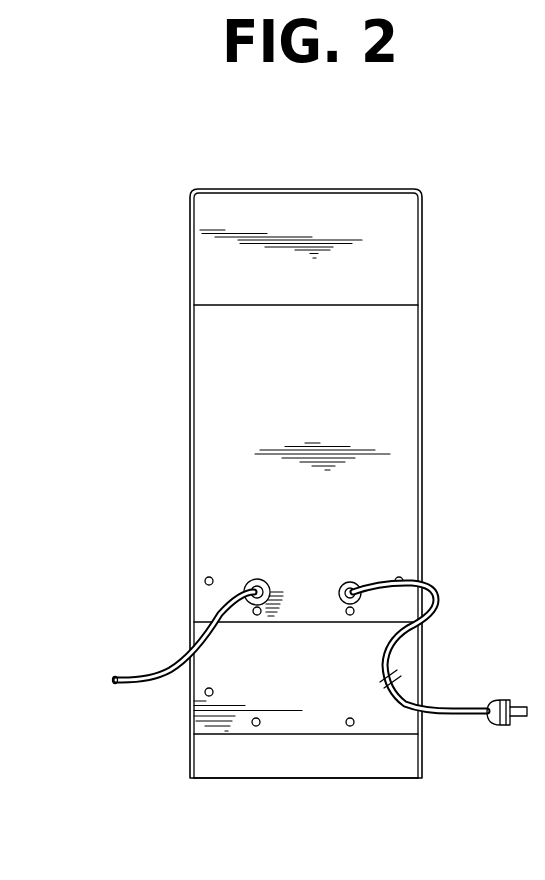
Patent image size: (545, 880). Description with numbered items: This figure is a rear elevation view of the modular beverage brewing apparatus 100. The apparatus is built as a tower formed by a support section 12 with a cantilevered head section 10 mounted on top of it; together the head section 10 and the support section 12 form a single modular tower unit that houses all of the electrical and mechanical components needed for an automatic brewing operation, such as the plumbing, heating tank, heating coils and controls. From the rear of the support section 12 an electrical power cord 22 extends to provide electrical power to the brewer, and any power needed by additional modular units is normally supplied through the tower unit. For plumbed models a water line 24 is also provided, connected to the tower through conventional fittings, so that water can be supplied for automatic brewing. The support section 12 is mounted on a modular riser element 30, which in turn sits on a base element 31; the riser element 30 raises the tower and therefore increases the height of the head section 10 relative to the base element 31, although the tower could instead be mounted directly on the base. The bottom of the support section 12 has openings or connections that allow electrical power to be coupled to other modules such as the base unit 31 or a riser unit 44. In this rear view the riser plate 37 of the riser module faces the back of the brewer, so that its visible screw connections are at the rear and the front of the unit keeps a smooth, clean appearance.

The beverage brewing apparatus 100 is at (418, 171).
The cantilevered head section 10 is at (203, 262).
The support section 12 is at (207, 424).
The water line 24 is at (130, 676).
The modular riser element 30 is at (406, 662).
The electrical power cord 22 is at (466, 716).
The riser plate 37 is at (320, 682).
The base element 31 is at (196, 751).
The riser unit 44 is at (318, 718).